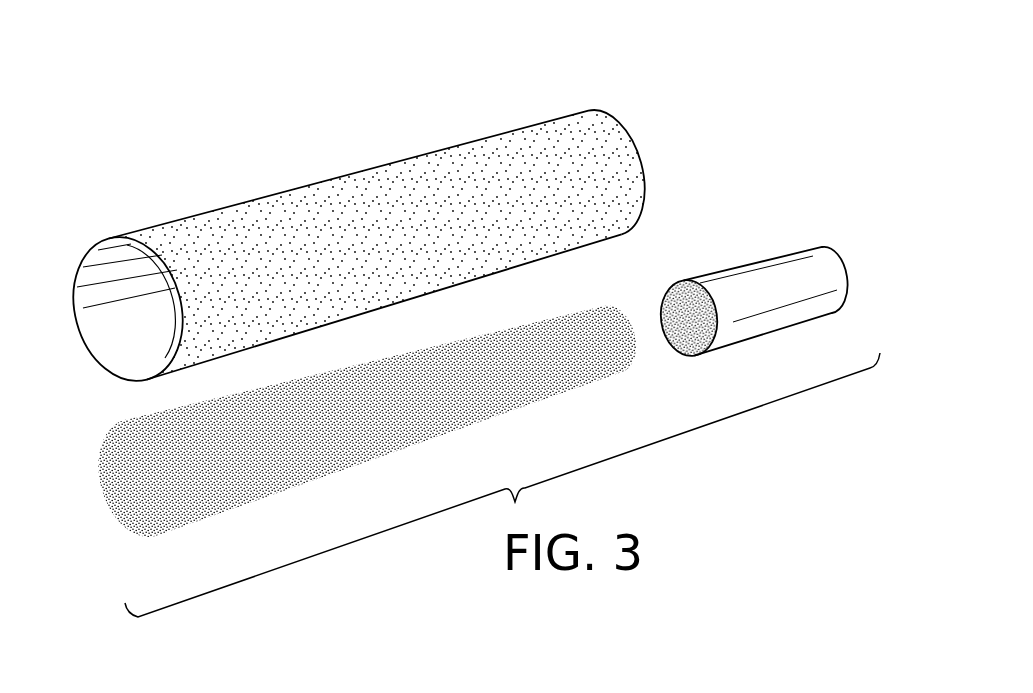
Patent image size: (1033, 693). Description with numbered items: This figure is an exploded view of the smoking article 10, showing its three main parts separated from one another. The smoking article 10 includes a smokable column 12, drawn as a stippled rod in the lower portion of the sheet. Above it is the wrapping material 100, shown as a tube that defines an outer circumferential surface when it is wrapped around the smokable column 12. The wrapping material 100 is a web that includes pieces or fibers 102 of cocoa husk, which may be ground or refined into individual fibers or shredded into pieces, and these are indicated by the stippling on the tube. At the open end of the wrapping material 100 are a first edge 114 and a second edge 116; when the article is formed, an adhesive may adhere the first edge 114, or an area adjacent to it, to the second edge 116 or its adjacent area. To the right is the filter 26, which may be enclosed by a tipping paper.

The smoking article 10 is at (306, 150).
The wrapping material 100 is at (329, 267).
The pieces or fibers of cocoa husk 102 is at (222, 253).
The first edge 114 is at (150, 378).
The second edge 116 is at (100, 364).
The smokable column 12 is at (320, 463).
The filter 26 is at (763, 317).